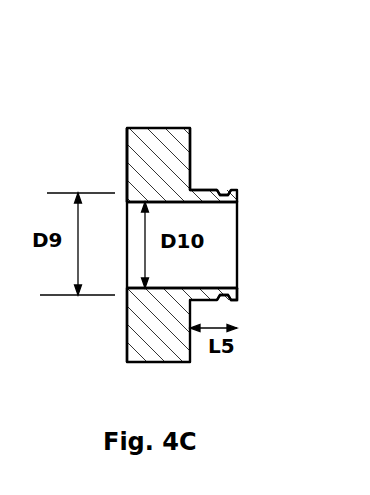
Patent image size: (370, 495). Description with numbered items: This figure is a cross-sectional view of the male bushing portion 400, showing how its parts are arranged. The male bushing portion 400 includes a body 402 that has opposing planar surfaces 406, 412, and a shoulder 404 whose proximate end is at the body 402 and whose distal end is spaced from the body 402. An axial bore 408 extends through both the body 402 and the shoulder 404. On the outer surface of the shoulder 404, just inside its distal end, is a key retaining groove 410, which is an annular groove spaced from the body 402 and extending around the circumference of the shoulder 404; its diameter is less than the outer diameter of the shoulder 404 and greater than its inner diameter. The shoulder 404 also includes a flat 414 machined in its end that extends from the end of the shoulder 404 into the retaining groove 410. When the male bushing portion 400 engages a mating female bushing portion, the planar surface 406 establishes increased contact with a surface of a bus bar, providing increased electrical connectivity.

The male bushing portion 400 is at (192, 105).
The body 402 is at (140, 148).
The shoulder 404 is at (198, 189).
The planar surface 406 is at (192, 157).
The axial bore 408 is at (220, 250).
The key retaining groove 410 is at (225, 189).
The planar surface 412 is at (123, 175).
The flat 414 is at (232, 298).